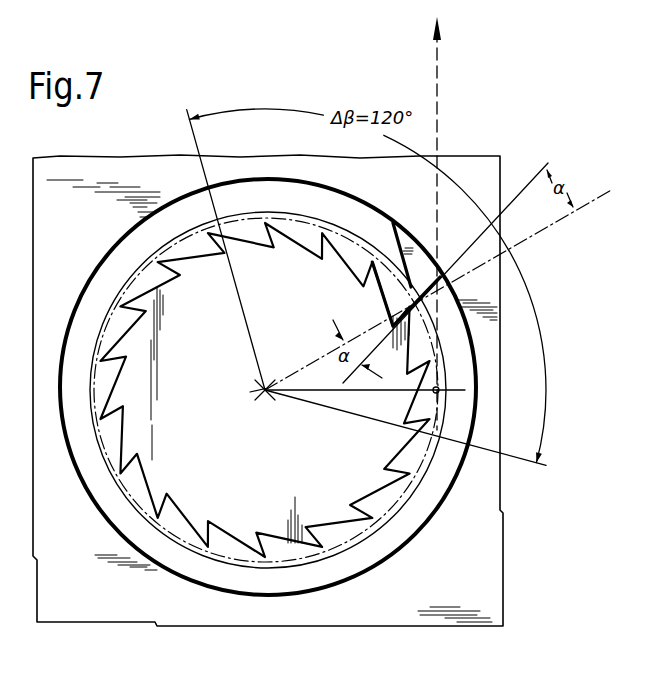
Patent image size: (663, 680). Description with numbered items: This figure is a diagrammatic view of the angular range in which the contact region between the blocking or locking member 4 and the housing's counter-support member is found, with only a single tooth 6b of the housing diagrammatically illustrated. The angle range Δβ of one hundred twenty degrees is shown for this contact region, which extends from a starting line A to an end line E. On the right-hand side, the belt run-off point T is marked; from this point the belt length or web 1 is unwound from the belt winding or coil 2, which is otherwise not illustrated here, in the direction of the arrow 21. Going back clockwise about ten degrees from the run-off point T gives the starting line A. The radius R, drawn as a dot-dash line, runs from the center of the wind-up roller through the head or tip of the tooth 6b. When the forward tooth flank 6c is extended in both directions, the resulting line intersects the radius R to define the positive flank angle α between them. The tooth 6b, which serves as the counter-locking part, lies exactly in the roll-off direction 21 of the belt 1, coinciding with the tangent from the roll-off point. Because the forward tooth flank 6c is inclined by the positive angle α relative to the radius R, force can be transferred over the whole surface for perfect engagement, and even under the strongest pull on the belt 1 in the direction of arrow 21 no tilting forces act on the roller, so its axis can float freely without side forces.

The belt length or web 1 is at (436, 106).
The belt winding or coil 2 is at (400, 497).
The blocking or locking member 4 is at (162, 488).
The tooth of the housing 6b is at (418, 272).
The forward tooth flank 6c is at (382, 300).
The arrow (roll-off direction) 21 is at (443, 38).
The belt run-off point T is at (440, 392).
The radius R is at (604, 188).
The end line E is at (193, 138).
The starting line A is at (515, 458).